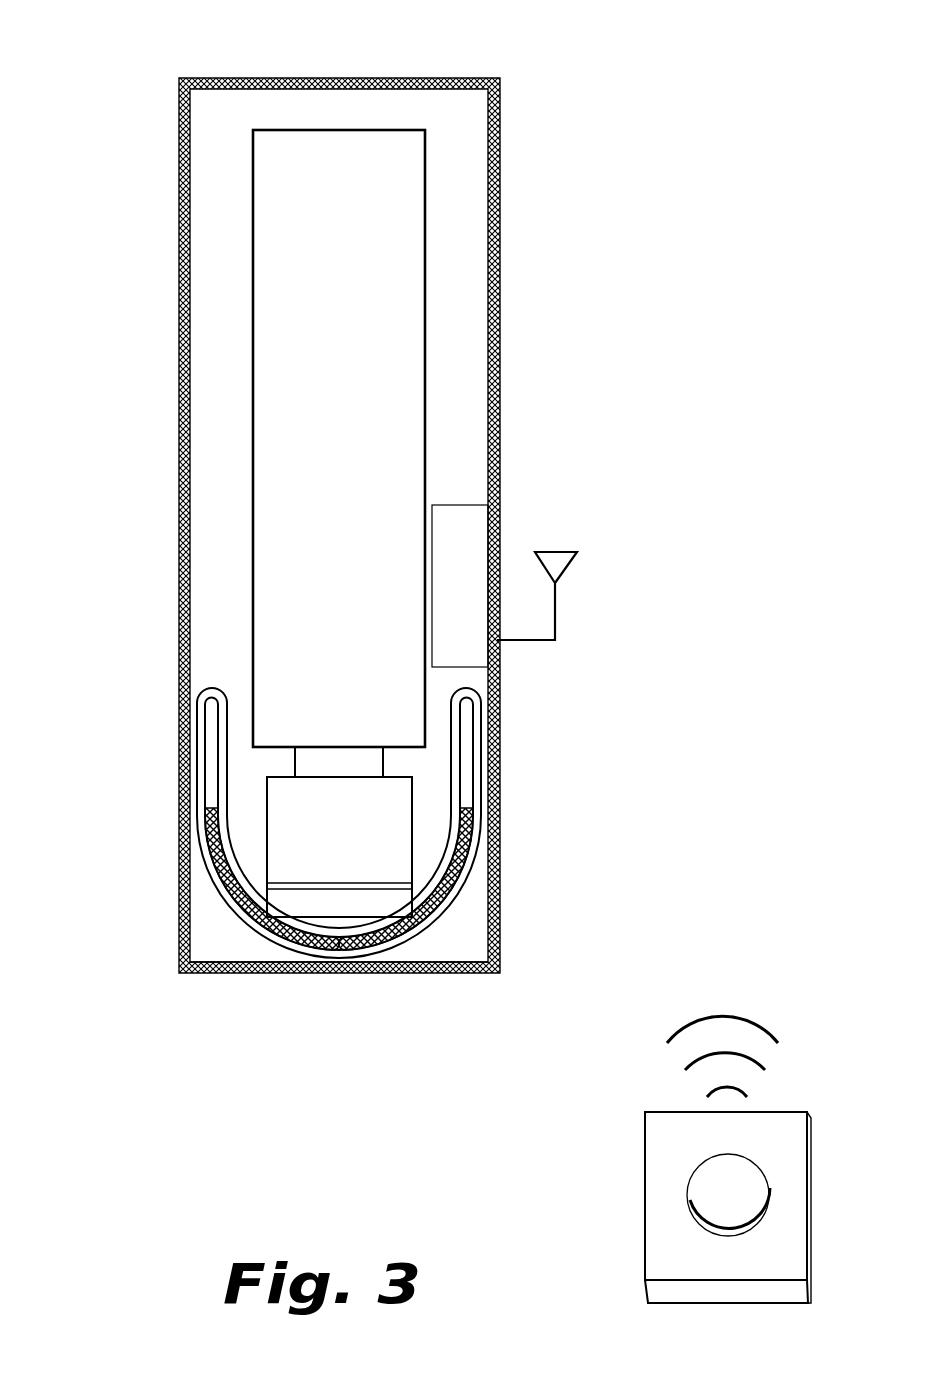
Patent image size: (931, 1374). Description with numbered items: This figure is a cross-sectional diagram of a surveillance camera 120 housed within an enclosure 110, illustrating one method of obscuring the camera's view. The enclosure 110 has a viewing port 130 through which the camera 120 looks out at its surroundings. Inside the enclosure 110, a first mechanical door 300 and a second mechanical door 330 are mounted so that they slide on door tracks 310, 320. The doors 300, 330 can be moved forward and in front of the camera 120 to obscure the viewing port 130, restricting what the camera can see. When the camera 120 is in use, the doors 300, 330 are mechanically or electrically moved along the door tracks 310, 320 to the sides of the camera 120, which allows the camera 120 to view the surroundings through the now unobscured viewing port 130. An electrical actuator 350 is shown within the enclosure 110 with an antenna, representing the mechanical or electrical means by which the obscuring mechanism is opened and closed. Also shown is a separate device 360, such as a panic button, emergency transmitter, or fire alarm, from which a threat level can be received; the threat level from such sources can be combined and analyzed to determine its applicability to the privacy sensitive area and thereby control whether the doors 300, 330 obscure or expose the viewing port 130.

The enclosure 110 is at (495, 97).
The camera 120 is at (429, 435).
The viewing port 130 is at (405, 972).
The first mechanical door 300 is at (473, 881).
The door track 310 is at (488, 772).
The door track 320 is at (194, 776).
The second mechanical door 330 is at (202, 882).
The electrical actuator 350 is at (472, 523).
The emergency transmitter 360 is at (753, 1274).